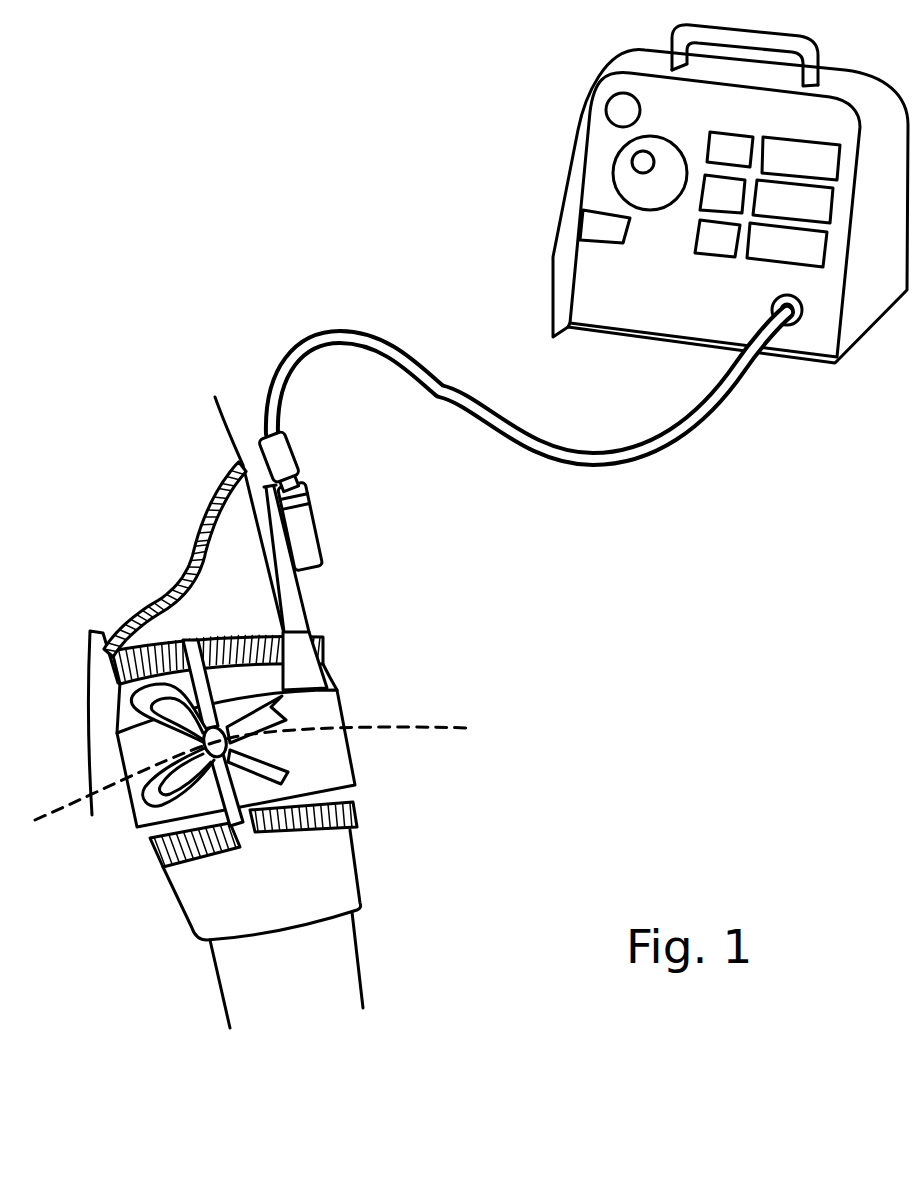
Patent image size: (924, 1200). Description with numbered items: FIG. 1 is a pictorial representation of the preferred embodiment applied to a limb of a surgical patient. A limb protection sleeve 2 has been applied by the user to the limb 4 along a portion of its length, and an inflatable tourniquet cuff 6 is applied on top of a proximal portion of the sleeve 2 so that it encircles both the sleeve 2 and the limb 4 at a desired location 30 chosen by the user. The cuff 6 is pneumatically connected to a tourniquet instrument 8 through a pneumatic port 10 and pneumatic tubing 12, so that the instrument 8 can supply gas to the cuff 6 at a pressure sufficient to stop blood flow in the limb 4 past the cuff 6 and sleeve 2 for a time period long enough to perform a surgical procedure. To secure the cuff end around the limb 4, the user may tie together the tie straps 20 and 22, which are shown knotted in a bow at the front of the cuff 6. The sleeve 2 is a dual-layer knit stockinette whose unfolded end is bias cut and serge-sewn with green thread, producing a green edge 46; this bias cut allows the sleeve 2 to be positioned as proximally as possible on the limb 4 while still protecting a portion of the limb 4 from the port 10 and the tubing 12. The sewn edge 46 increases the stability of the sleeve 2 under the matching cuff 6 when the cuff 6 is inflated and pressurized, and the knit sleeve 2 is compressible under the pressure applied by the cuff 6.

The limb protection sleeve 2 is at (357, 888).
The limb 4 is at (363, 988).
The inflatable tourniquet cuff 6 is at (327, 675).
The tourniquet instrument 8 is at (573, 137).
The pneumatic port 10 is at (305, 535).
The pneumatic tubing 12 is at (368, 332).
The tie strap 20 is at (190, 650).
The tie strap 22 is at (238, 826).
The desired location 30 is at (398, 722).
The green edge 46 is at (208, 512).